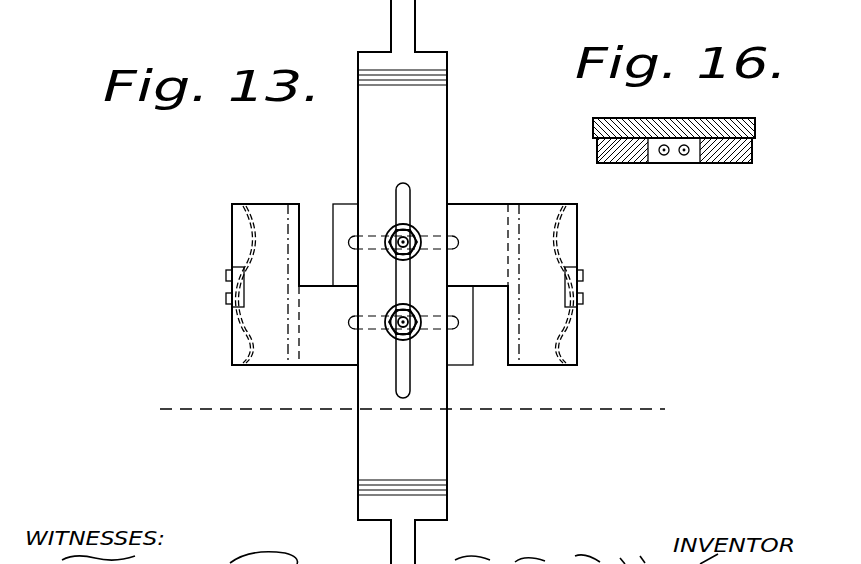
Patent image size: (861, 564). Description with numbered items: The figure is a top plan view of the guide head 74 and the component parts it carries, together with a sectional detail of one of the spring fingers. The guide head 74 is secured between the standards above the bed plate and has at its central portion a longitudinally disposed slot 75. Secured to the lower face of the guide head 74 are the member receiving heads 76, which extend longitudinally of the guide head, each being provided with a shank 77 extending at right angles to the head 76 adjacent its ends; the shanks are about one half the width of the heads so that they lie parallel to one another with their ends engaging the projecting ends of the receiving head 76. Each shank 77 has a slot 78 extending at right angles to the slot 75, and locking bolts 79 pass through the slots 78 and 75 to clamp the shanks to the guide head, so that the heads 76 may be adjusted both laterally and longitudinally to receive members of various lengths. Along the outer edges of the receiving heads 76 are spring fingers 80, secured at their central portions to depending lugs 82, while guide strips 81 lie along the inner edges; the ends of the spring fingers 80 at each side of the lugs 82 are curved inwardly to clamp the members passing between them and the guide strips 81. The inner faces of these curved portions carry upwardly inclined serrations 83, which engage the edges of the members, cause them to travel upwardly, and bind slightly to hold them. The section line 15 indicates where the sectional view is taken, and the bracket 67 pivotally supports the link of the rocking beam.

In FIG. 13, the section line 15— 15 is at (410, 410).
In FIG. 16, the bracket 67 is at (678, 120).
In FIG. 13, the guide head 74 is at (260, 204).
In FIG. 13, the longitudinally disposed slot 75 is at (408, 190).
In FIG. 13, the member receiving head 76 is at (232, 248).
In FIG. 13, the shank 77 is at (498, 228).
In FIG. 13, the slot 78 is at (354, 238).
In FIG. 13, the locking bolt 79 is at (389, 230).
In FIG. 13, the spring finger 80 is at (246, 340).
In FIG. 16, the spring finger 80 is at (668, 163).
In FIG. 13, the guide strip 81 is at (294, 366).
In FIG. 13, the depending lug 82 is at (226, 288).
In FIG. 16, the serrations 83 is at (738, 161).